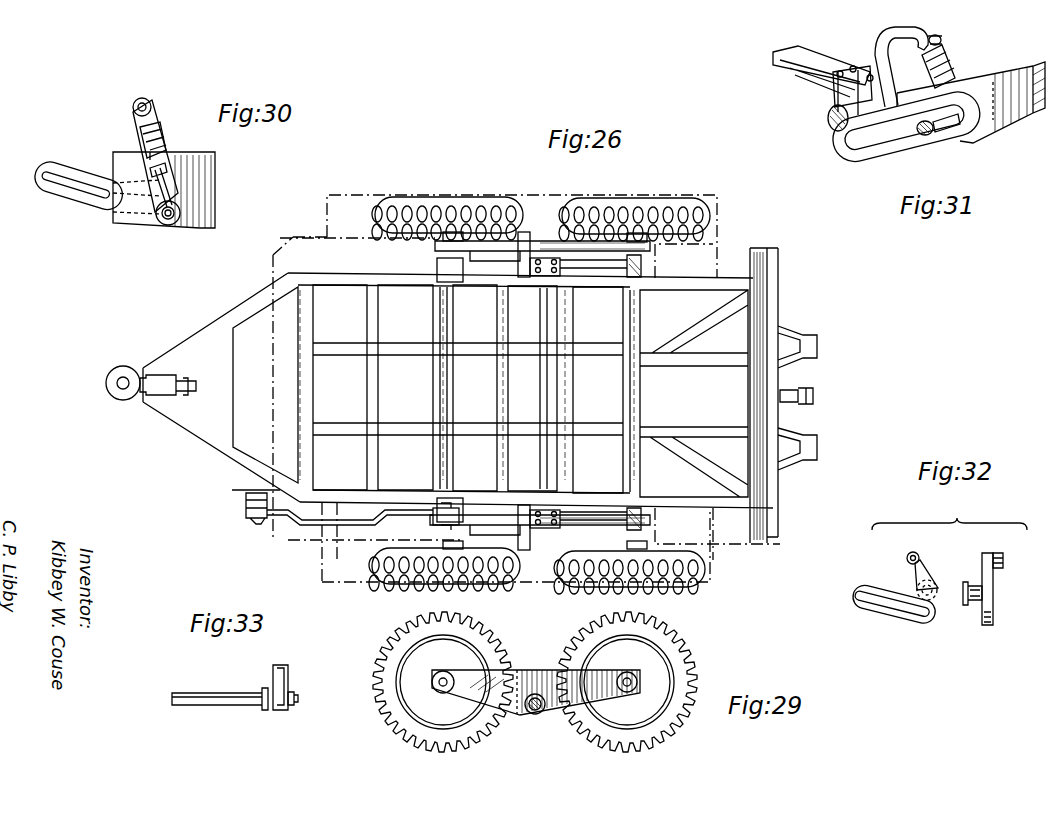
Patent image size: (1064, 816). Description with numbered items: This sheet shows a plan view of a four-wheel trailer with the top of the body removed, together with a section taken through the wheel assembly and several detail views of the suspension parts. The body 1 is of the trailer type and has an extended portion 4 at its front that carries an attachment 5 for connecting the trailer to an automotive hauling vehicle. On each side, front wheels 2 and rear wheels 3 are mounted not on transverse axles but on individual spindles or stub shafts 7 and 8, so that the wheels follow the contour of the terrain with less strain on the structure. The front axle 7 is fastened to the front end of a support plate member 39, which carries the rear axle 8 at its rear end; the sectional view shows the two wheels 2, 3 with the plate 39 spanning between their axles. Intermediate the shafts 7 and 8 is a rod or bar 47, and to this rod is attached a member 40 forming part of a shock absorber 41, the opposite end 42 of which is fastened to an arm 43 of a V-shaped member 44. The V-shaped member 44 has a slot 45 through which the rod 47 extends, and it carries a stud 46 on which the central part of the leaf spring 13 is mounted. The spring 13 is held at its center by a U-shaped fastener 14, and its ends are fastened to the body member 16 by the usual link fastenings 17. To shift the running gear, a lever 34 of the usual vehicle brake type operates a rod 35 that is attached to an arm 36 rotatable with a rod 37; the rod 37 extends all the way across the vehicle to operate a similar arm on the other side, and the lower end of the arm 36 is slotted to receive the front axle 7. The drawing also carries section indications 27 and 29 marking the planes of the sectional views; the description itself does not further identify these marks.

In FIG. 26, the body 1 is at (731, 278).
In FIG. 26, the front wheels 2 is at (440, 198).
In FIG. 29, the front wheels 2 is at (376, 670).
In FIG. 26, the rear wheels 3 is at (645, 199).
In FIG. 29, the rear wheels 3 is at (693, 662).
In FIG. 26, the extended portion 4 is at (226, 322).
In FIG. 26, the attachment 5 is at (150, 378).
In FIG. 26, the front spindle or stub shaft 7 is at (455, 232).
In FIG. 29, the front spindle or stub shaft 7 is at (432, 686).
In FIG. 26, the rear spindle or stub shaft 8 is at (640, 233).
In FIG. 29, the rear spindle or stub shaft 8 is at (640, 676).
In FIG. 26, the spring 13 is at (450, 277).
In FIG. 31, the spring 13 is at (800, 72).
In FIG. 26, the U-shaped fastener 14 is at (530, 268).
In FIG. 31, the U-shaped fastener 14 is at (838, 96).
In FIG. 26, the body member 16 is at (383, 283).
In FIG. 26, the link fastening 17 is at (645, 277).
In FIG. 26, the spring centre line 27 is at (430, 528).
In FIG. 26, the axle centre line 29 is at (421, 250).
In FIG. 26, the lever 34 is at (246, 512).
In FIG. 26, the rod 35 is at (290, 520).
In FIG. 26, the arm 36 is at (432, 505).
In FIG. 26, the rod 37 is at (440, 460).
In FIG. 26, the support plate member 39 is at (530, 246).
In FIG. 29, the support plate member 39 is at (538, 659).
In FIG. 30, the support plate member 39 is at (113, 160).
In FIG. 31, the support plate member 39 is at (1000, 120).
In FIG. 30, the member 40 is at (163, 188).
In FIG. 30, the shock absorber 41 is at (160, 130).
In FIG. 31, the shock absorber 41 is at (950, 64).
In FIG. 30, the opposite end 42 is at (132, 110).
In FIG. 31, the opposite end 42 is at (942, 42).
In FIG. 30, the arm 43 is at (150, 112).
In FIG. 31, the arm 43 is at (888, 34).
In FIG. 32, the arm 43 is at (907, 560).
In FIG. 26, the V-shaped member 44 is at (500, 238).
In FIG. 30, the V-shaped member 44 is at (78, 206).
In FIG. 31, the V-shaped member 44 is at (900, 103).
In FIG. 32, the V-shaped member 44 is at (907, 622).
In FIG. 33, the V-shaped member 44 is at (290, 682).
In FIG. 30, the slot 45 is at (98, 212).
In FIG. 31, the slot 45 is at (875, 147).
In FIG. 32, the slot 45 is at (884, 610).
In FIG. 30, the stud 46 is at (160, 223).
In FIG. 31, the stud 46 is at (836, 130).
In FIG. 32, the stud 46 is at (915, 590).
In FIG. 33, the stud 46 is at (298, 700).
In FIG. 29, the rod or bar 47 is at (536, 714).
In FIG. 30, the rod or bar 47 is at (170, 228).
In FIG. 31, the rod or bar 47 is at (936, 134).
In FIG. 33, the rod or bar 47 is at (230, 688).